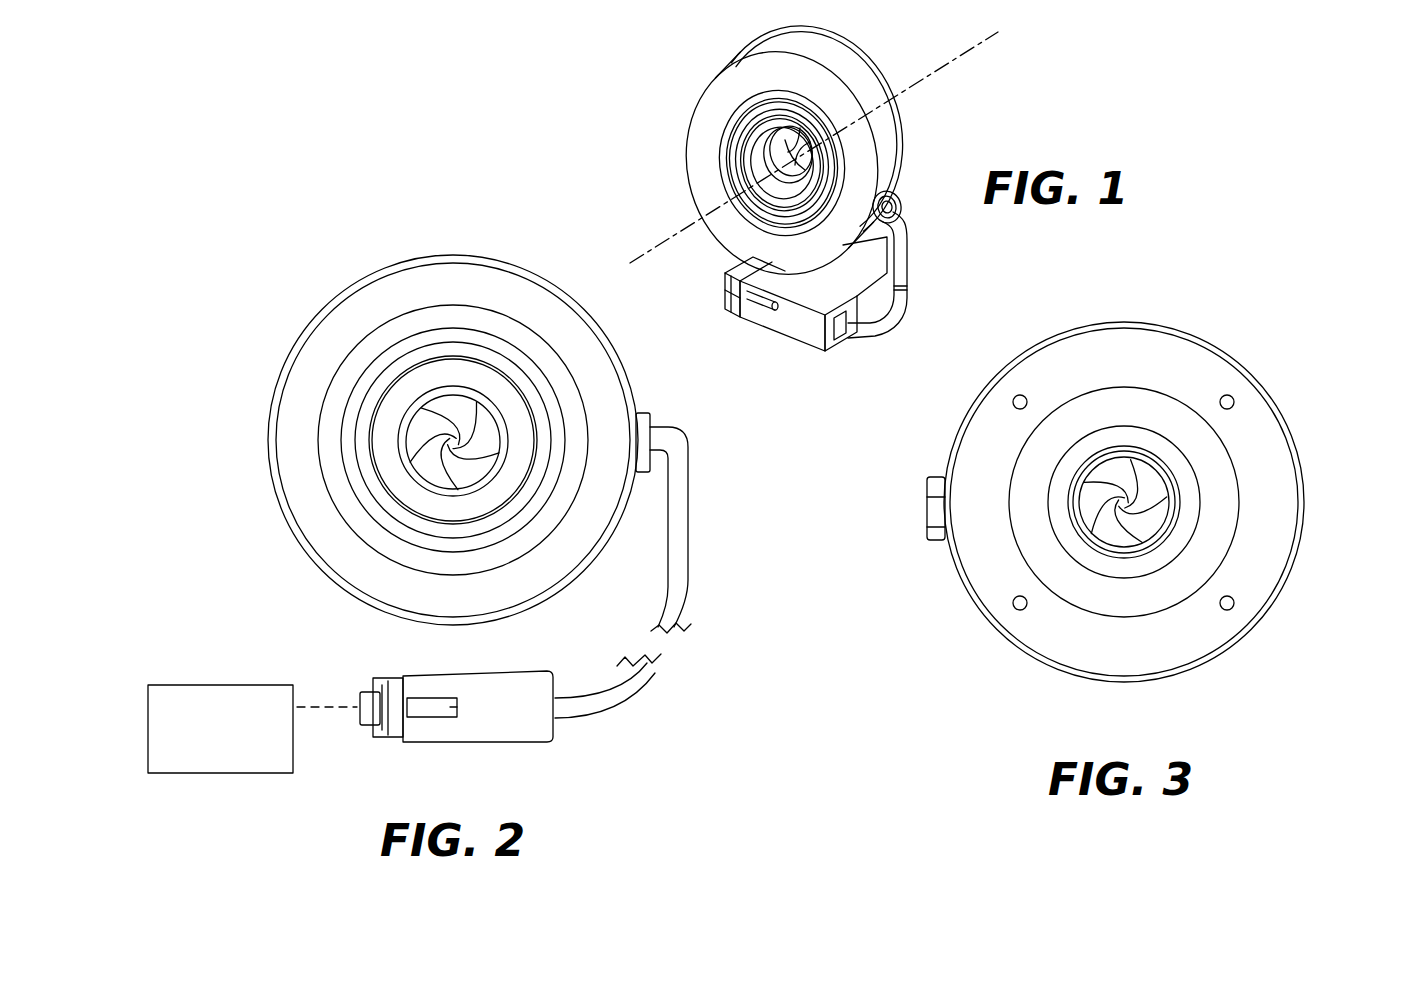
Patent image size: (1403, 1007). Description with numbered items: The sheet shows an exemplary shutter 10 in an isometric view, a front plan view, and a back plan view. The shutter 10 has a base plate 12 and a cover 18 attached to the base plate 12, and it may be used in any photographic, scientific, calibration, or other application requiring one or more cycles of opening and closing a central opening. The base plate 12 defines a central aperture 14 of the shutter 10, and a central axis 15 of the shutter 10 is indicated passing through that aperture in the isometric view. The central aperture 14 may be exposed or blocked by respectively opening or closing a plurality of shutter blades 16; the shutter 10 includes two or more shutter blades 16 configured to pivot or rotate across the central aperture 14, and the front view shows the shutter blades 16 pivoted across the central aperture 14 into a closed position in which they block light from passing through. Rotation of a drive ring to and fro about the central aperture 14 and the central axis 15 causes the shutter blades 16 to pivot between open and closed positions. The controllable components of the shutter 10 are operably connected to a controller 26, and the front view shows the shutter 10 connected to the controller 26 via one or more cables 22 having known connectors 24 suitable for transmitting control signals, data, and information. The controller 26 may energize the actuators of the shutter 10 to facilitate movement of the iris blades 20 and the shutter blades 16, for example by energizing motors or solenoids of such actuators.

In FIG. 1, the shutter 10 is at (905, 109).
In FIG. 2, the shutter 10 is at (358, 245).
In FIG. 1, the base plate 12 is at (907, 143).
In FIG. 3, the base plate 12 is at (1141, 367).
In FIG. 1, the central aperture 14 is at (782, 162).
In FIG. 2, the central aperture 14 is at (483, 413).
In FIG. 3, the central aperture 14 is at (1153, 473).
In FIG. 1, the central axis 15 is at (987, 50).
In FIG. 2, the shutter blades 16 is at (497, 443).
In FIG. 1, the cover 18 is at (702, 99).
In FIG. 2, the cover 18 is at (481, 297).
In FIG. 3, the iris blades 20 is at (1145, 503).
In FIG. 1, the cables 22 is at (877, 275).
In FIG. 2, the cables 22 is at (688, 556).
In FIG. 2, the connectors 24 is at (488, 740).
In FIG. 2, the controller 26 is at (246, 685).